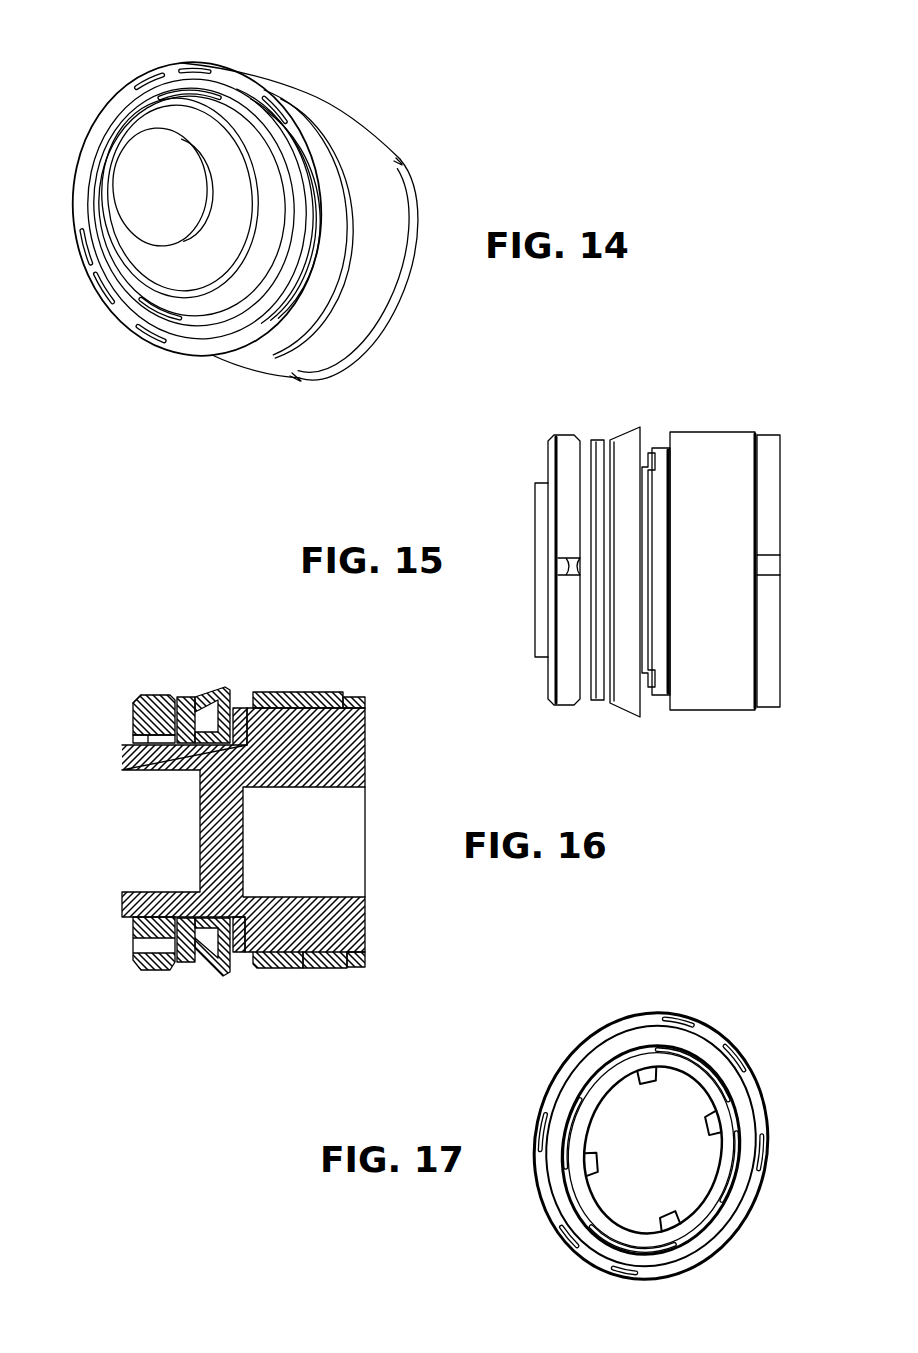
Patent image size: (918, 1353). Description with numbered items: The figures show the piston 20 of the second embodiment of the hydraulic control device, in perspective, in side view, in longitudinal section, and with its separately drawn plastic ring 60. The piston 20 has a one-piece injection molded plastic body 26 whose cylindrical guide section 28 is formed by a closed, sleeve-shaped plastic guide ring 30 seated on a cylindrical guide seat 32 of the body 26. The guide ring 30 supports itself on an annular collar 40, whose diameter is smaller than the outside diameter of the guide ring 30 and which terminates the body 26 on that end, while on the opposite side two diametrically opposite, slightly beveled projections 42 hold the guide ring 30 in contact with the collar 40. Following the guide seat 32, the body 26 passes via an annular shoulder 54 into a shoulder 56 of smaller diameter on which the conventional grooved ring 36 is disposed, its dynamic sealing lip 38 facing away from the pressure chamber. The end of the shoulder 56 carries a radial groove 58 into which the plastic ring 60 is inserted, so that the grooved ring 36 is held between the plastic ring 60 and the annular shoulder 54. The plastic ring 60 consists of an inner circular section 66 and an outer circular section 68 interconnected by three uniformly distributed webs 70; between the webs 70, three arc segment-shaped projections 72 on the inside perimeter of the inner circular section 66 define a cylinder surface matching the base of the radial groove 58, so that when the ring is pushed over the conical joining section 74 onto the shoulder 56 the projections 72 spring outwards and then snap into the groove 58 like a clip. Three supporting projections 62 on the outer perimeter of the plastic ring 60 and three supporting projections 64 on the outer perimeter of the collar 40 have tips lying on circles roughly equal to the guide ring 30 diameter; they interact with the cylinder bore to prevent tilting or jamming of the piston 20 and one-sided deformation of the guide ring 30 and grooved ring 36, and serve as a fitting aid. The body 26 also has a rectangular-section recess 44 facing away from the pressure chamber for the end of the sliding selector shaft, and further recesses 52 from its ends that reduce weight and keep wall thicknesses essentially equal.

In FIG. 14, the piston 20 is at (330, 87).
In FIG. 15, the piston 20 is at (770, 430).
In FIG. 16, the piston 20 is at (352, 688).
In FIG. 14, the body 26 is at (120, 143).
In FIG. 15, the body 26 is at (660, 640).
In FIG. 16, the body 26 is at (243, 712).
In FIG. 14, the guide section 28 is at (348, 122).
In FIG. 15, the guide section 28 is at (722, 432).
In FIG. 16, the guide section 28 is at (305, 690).
In FIG. 14, the guide ring 30 is at (291, 220).
In FIG. 15, the guide ring 30 is at (711, 560).
In FIG. 16, the guide ring 30 is at (268, 969).
In FIG. 16, the guide seat 32 is at (312, 969).
In FIG. 14, the grooved ring 36 is at (300, 100).
In FIG. 15, the grooved ring 36 is at (598, 446).
In FIG. 16, the grooved ring 36 is at (180, 700).
In FIG. 15, the dynamic sealing lip 38 is at (623, 444).
In FIG. 16, the dynamic sealing lip 38 is at (219, 688).
In FIG. 14, the annular collar 40 is at (380, 302).
In FIG. 15, the annular collar 40 is at (768, 528).
In FIG. 16, the annular collar 40 is at (362, 969).
In FIG. 15, the projections 42 is at (658, 452).
In FIG. 16, the recess 44 is at (304, 840).
In FIG. 14, the recesses 52 is at (160, 187).
In FIG. 16, the recesses 52 is at (157, 830).
In FIG. 16, the annular shoulder 54 is at (220, 976).
In FIG. 16, the shoulder 56 is at (183, 964).
In FIG. 16, the radial groove 58 is at (134, 727).
In FIG. 14, the plastic ring 60 is at (178, 62).
In FIG. 15, the plastic ring 60 is at (548, 440).
In FIG. 16, the plastic ring 60 is at (132, 932).
In FIG. 17, the plastic ring 60 is at (723, 1020).
In FIG. 14, the supporting projections 62 is at (262, 92).
In FIG. 15, the supporting projections 62 is at (562, 568).
In FIG. 17, the supporting projections 62 is at (642, 1013).
In FIG. 14, the supporting projections 64 is at (400, 162).
In FIG. 15, the supporting projections 64 is at (770, 571).
In FIG. 17, the inner circular section 66 is at (766, 1112).
In FIG. 14, the outer circular section 68 is at (194, 207).
In FIG. 17, the outer circular section 68 is at (587, 1072).
In FIG. 17, the webs 70 is at (742, 1065).
In FIG. 17, the projections 72 is at (710, 1172).
In FIG. 15, the conical joining section 74 is at (546, 533).
In FIG. 16, the conical joining section 74 is at (128, 740).